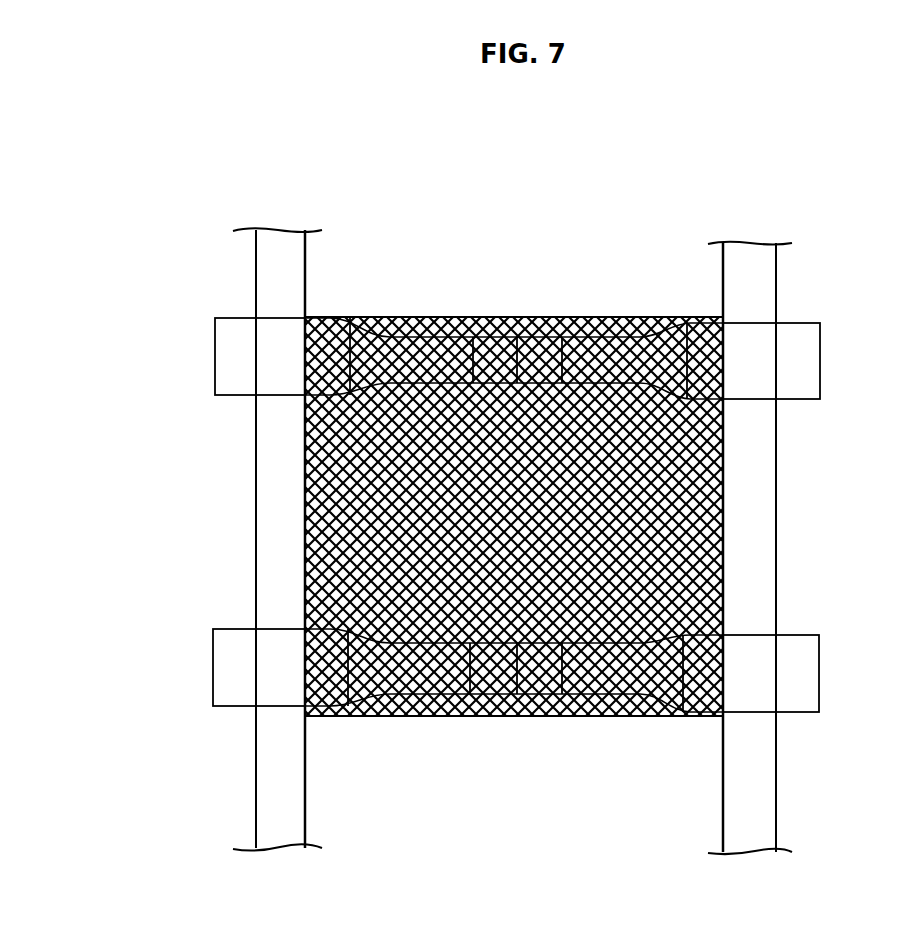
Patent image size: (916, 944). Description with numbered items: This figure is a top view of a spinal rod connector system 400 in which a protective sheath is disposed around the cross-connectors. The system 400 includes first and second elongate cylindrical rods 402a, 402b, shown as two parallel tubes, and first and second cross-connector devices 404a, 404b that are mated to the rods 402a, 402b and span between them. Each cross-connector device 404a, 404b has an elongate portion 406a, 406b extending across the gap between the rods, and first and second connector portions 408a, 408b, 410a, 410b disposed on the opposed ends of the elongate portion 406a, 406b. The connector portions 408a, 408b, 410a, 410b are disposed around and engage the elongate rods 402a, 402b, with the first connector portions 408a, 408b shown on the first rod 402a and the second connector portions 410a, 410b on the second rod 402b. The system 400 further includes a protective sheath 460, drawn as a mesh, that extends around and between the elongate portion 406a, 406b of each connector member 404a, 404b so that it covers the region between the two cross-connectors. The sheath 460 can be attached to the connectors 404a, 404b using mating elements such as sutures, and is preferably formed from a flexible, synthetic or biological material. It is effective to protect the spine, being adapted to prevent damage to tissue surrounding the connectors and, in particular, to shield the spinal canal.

The spinal rod connector system 400 is at (263, 123).
The first elongate cylindrical rod 402a is at (278, 462).
The second elongate cylindrical rod 402b is at (759, 449).
The first cross-connector device 404a is at (195, 365).
The second cross-connector device 404b is at (195, 668).
The elongate portion 406a is at (451, 367).
The elongate portion 406b is at (450, 670).
The first connector portion 408a is at (242, 332).
The first connector portion 408b is at (242, 690).
The second connector portion 410a is at (785, 333).
The second connector portion 410b is at (765, 692).
The protective sheath 460 is at (648, 522).